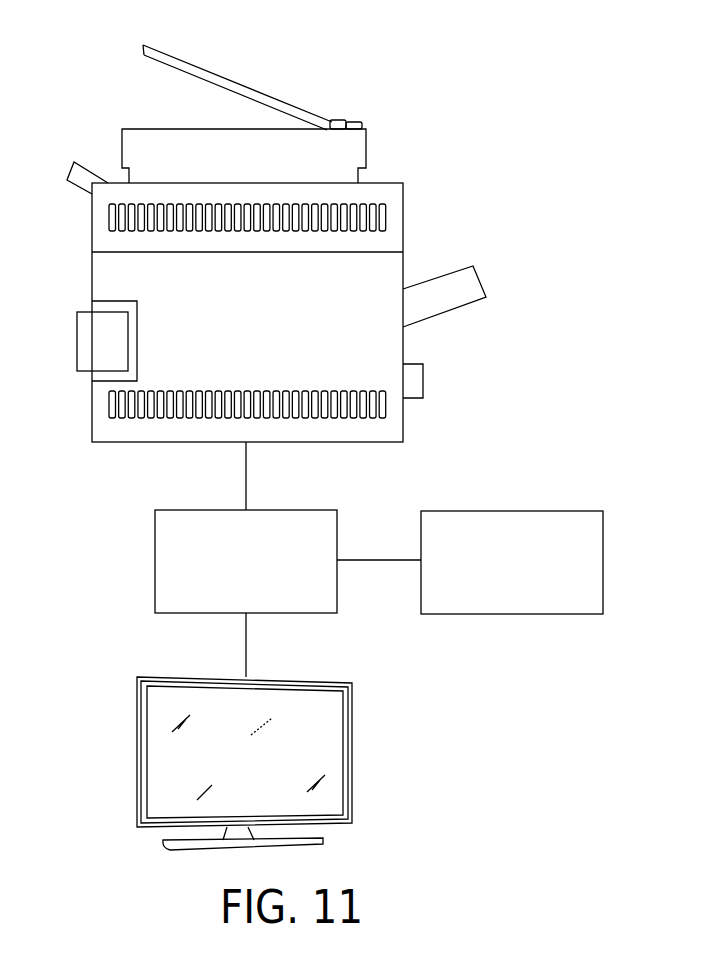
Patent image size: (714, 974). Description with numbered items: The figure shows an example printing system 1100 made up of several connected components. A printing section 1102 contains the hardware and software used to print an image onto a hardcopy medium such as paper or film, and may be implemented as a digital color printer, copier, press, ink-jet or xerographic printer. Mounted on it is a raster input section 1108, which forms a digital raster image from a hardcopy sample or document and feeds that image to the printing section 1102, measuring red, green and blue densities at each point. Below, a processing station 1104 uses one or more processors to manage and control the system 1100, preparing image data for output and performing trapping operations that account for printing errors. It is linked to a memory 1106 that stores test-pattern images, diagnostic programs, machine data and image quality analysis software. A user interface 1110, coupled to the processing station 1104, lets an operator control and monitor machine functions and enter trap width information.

The printing system 1100 is at (493, 148).
The printing section 1102 is at (357, 283).
The processing station 1104 is at (155, 560).
The memory 1106 is at (511, 511).
The raster input section 1108 is at (366, 149).
The user interface 1110 is at (137, 755).